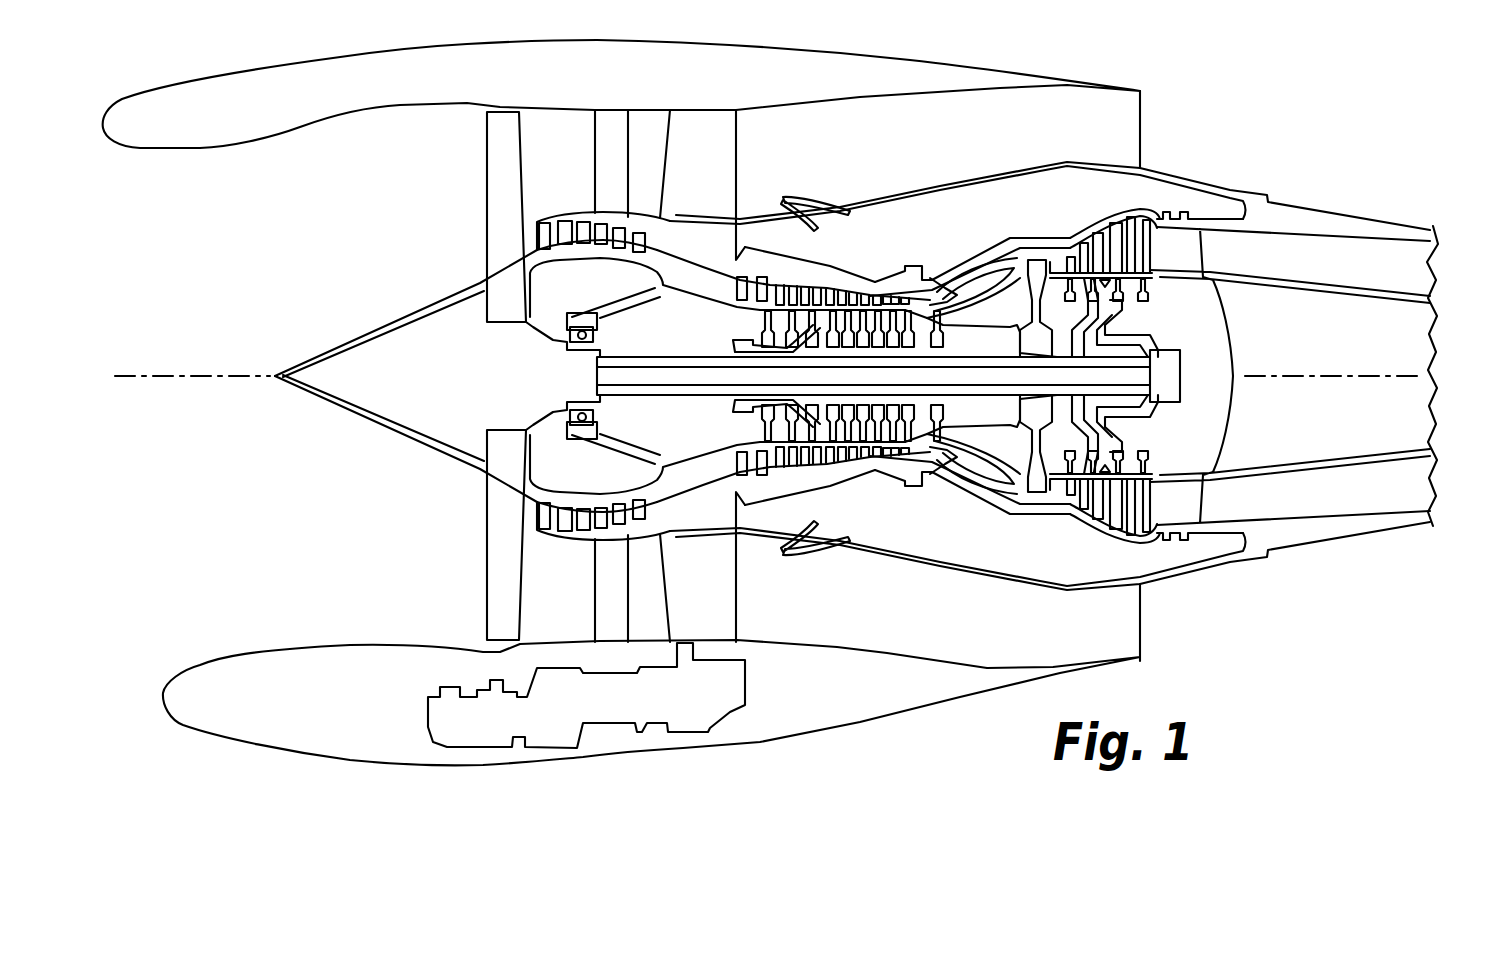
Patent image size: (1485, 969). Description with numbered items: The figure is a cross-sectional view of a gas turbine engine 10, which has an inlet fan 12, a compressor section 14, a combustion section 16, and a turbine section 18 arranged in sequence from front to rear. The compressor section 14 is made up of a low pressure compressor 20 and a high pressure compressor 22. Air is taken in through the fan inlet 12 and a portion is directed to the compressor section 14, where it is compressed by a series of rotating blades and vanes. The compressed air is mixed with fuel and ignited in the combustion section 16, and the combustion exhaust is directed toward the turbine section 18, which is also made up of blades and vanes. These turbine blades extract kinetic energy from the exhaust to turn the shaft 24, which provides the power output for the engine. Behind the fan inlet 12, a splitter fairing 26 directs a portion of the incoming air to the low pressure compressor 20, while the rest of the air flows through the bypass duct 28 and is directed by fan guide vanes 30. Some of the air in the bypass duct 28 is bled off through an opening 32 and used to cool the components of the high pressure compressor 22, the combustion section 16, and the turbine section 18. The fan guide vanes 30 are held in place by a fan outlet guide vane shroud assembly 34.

The gas turbine engine 10 is at (1298, 143).
The inlet fan 12 is at (440, 136).
The compressor section 14 is at (757, 137).
The combustion section 16 is at (964, 216).
The turbine section 18 is at (1100, 195).
The low pressure compressor 20 is at (565, 546).
The high pressure compressor 22 is at (850, 455).
The shaft 24 is at (1163, 380).
The splitter fairing 26 is at (590, 212).
The bypass duct 28 is at (648, 137).
The fan guide vanes 30 is at (613, 120).
The opening 32 is at (787, 210).
The fan outlet guide vane shroud assembly 34 is at (610, 213).